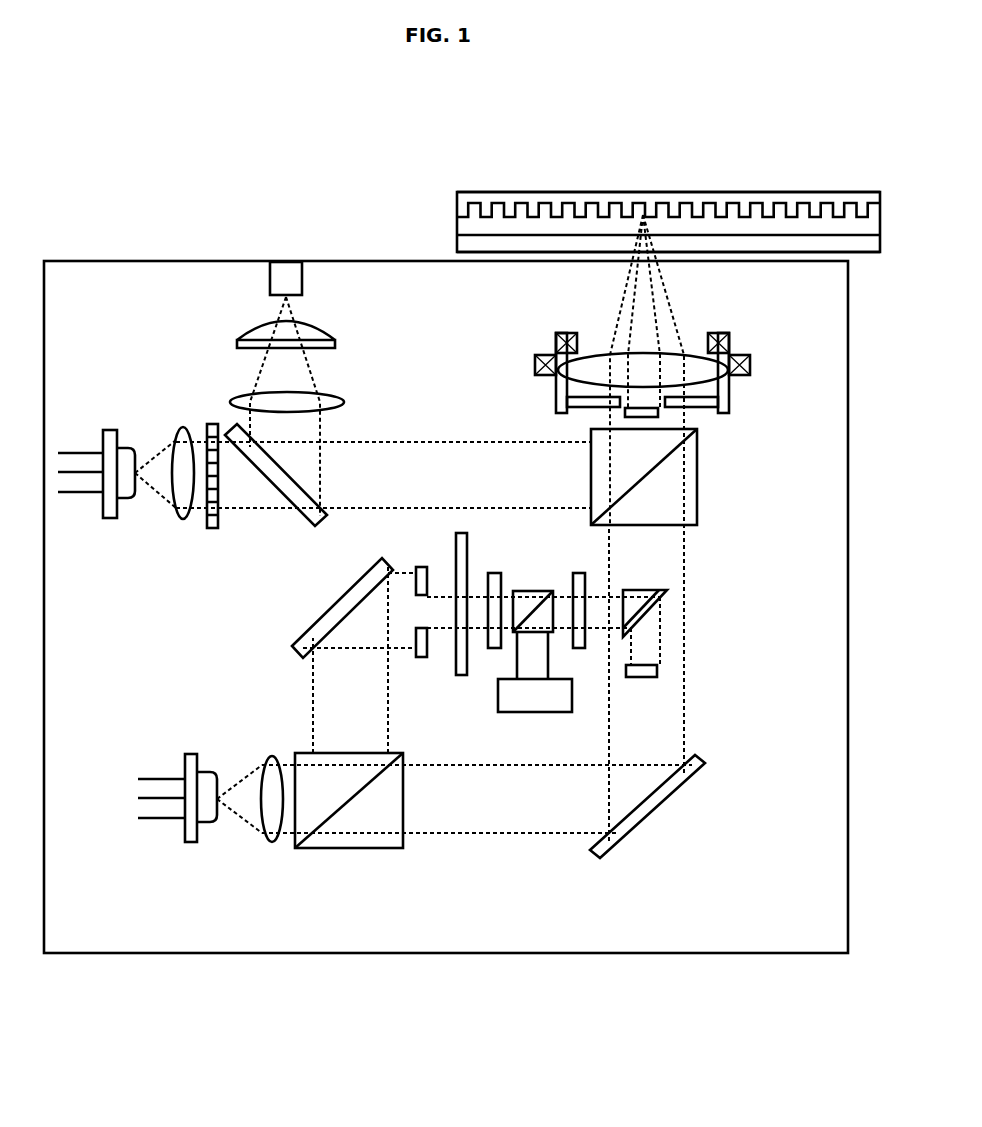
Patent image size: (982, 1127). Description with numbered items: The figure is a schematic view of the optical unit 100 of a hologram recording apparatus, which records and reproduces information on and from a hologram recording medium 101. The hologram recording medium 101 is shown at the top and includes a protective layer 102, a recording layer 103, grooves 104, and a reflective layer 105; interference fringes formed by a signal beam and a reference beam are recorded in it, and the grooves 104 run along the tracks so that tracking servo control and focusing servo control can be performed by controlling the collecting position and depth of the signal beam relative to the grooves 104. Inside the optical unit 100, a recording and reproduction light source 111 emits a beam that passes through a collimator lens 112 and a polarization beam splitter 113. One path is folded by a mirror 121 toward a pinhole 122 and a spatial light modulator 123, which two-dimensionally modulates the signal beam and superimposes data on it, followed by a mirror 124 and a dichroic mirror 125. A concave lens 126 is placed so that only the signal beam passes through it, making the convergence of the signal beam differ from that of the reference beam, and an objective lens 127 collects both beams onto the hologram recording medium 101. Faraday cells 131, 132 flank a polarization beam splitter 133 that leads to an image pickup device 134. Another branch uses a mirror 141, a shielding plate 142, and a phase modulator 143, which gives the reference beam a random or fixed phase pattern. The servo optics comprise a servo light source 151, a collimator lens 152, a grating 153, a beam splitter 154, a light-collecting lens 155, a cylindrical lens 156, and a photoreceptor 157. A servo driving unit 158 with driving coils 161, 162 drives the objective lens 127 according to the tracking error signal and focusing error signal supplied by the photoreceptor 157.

The optical unit 100 is at (153, 260).
The hologram recording medium 101 is at (382, 157).
The protective layer 102 is at (457, 241).
The recording layer 103 is at (457, 226).
The grooves 104 is at (457, 207).
The reflective layer 105 is at (457, 197).
The recording and reproduction light source 111 is at (190, 843).
The collimator lens 112 is at (272, 843).
The polarization beam splitter 113 is at (345, 848).
The mirror 121 is at (296, 650).
The pinhole 122 is at (420, 566).
The spatial light modulator 123 is at (461, 676).
The mirror 124 is at (645, 617).
The dichroic mirror 125 is at (697, 512).
The concave lens 126 is at (650, 418).
The objective lens 127 is at (688, 355).
The Faraday cell 131 is at (494, 573).
The Faraday cell 132 is at (575, 573).
The polarization beam splitter 133 is at (533, 591).
The image pickup device 134 is at (535, 712).
The mirror 141 is at (645, 811).
The shielding plate 142 is at (657, 671).
The phase modulator 143 is at (700, 408).
The servo light source 151 is at (110, 518).
The collimator lens 152 is at (183, 519).
The grating 153 is at (213, 528).
The beam splitter 154 is at (305, 521).
The light-collecting lens 155 is at (344, 402).
The cylindrical lens 156 is at (335, 343).
The photoreceptor 157 is at (302, 272).
The servo driving unit 158 is at (681, 376).
The driving coil 161 is at (729, 343).
The driving coil 162 is at (750, 368).